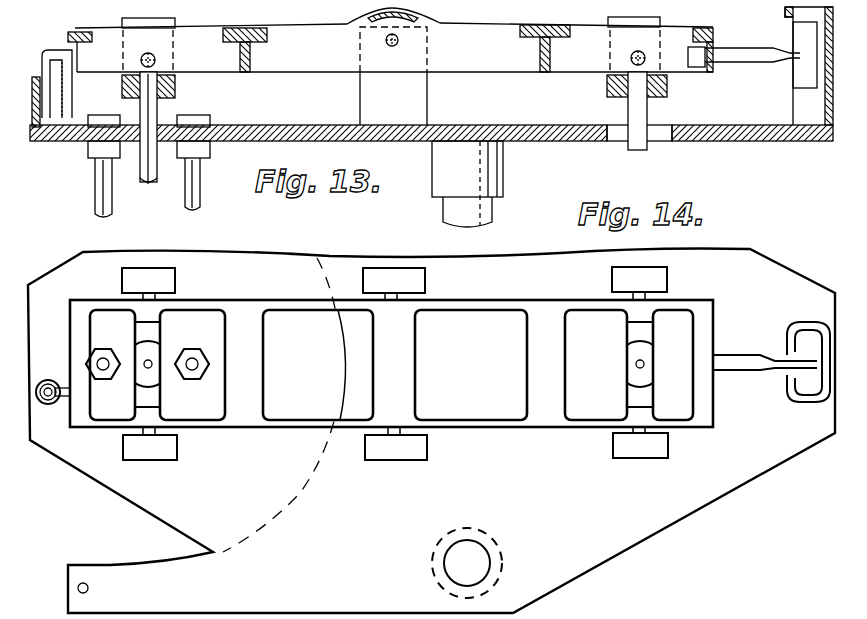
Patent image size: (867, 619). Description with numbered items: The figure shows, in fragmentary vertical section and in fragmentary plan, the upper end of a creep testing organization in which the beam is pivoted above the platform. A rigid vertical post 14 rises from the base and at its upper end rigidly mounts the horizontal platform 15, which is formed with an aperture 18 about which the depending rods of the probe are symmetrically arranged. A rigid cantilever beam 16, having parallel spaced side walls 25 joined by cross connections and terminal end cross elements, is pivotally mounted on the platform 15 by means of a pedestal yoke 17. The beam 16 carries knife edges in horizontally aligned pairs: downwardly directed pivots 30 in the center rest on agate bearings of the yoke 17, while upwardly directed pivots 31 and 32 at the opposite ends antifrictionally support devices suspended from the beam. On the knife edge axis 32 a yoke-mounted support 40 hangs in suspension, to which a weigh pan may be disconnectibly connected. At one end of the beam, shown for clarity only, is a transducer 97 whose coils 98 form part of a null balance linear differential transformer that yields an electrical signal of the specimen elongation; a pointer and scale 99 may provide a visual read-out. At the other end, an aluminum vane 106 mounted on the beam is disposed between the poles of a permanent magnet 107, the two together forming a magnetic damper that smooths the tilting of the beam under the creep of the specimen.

In FIG. 13, the rigid vertical post 14 is at (487, 208).
In FIG. 14, the rigid vertical post 14 is at (477, 565).
In FIG. 13, the horizontal platform 15 is at (557, 141).
In FIG. 13, the rigid beam 16 is at (493, 24).
In FIG. 14, the rigid beam 16 is at (523, 302).
In FIG. 13, the pedestal yoke 17 is at (413, 97).
In FIG. 14, the pedestal yoke 17 is at (427, 450).
In FIG. 13, the aperture 18 is at (177, 155).
In FIG. 14, the aperture 18 is at (163, 378).
In FIG. 14, the side wall 25 is at (452, 302).
In FIG. 13, the downwardly directed pivot 30 is at (390, 47).
In FIG. 14, the downwardly directed pivot 30 is at (393, 436).
In FIG. 13, the upwardly directed pivot 31 is at (157, 58).
In FIG. 14, the upwardly directed pivot 31 is at (150, 440).
In FIG. 13, the upwardly directed pivot 32 is at (640, 50).
In FIG. 14, the upwardly directed pivot 32 is at (640, 435).
In FIG. 13, the yoke-mounted support 40 is at (640, 113).
In FIG. 13, the transducer 97 is at (30, 100).
In FIG. 13, the coils 98 is at (32, 120).
In FIG. 14, the coils 98 is at (47, 405).
In FIG. 13, the pointer and scale 99 is at (47, 88).
In FIG. 14, the pointer and scale 99 is at (58, 382).
In FIG. 13, the aluminum vane 106 is at (800, 65).
In FIG. 14, the aluminum vane 106 is at (807, 382).
In FIG. 13, the permanent magnet 107 is at (800, 97).
In FIG. 14, the permanent magnet 107 is at (807, 325).